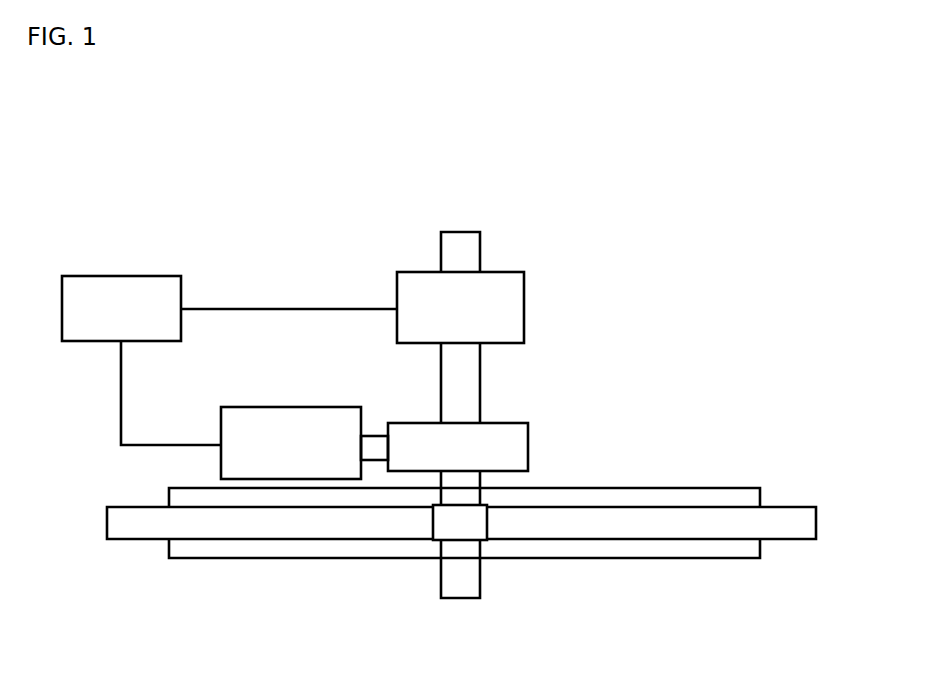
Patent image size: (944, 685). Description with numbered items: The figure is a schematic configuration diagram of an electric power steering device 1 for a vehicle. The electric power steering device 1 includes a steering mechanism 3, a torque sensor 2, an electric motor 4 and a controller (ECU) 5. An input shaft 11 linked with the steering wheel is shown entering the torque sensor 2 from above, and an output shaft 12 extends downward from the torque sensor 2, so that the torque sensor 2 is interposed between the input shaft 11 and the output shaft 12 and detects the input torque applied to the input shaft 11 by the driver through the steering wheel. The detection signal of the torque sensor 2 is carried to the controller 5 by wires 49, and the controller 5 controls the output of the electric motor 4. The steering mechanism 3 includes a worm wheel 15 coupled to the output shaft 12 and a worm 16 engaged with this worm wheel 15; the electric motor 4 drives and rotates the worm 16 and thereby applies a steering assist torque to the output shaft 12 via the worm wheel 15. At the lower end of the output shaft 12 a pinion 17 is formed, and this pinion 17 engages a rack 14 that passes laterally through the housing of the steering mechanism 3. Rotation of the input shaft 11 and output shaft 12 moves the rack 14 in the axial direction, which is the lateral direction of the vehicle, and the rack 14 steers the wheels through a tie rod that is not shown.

The electric power steering device 1 is at (722, 320).
The torque sensor 2 is at (524, 309).
The steering mechanism 3 is at (238, 567).
The electric motor 4 is at (287, 407).
The controller (ECU) 5 is at (134, 276).
The input shaft 11 is at (480, 246).
The output shaft 12 is at (480, 588).
The rack 14 is at (772, 518).
The worm wheel 15 is at (528, 441).
The worm 16 is at (373, 436).
The pinion 17 is at (441, 533).
The wires 49 is at (289, 309).